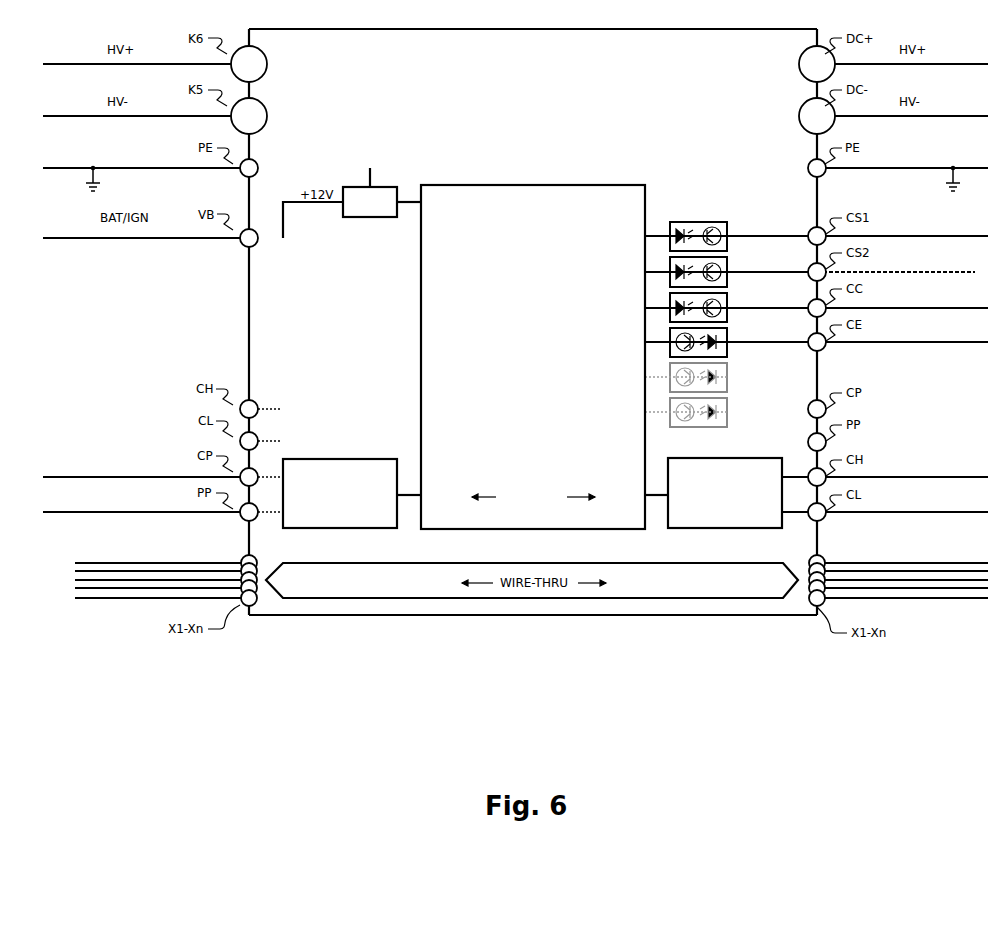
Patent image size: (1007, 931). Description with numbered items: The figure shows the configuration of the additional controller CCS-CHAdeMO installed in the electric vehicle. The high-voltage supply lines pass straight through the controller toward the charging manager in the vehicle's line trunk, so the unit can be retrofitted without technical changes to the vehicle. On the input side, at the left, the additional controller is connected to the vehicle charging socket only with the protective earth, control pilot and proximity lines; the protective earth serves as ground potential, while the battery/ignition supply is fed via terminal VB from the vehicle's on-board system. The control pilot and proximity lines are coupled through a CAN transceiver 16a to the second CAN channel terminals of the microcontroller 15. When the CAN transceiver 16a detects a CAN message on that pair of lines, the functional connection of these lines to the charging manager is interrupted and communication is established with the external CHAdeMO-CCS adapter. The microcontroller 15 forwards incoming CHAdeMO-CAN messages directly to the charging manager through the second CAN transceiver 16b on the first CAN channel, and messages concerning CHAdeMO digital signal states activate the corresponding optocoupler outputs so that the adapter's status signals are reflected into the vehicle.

The microcontroller of the additional controller 15 is at (421, 332).
The CAN transceiver of the additional controller 16a is at (340, 459).
The CAN transceiver of the additional controller 16b is at (757, 458).